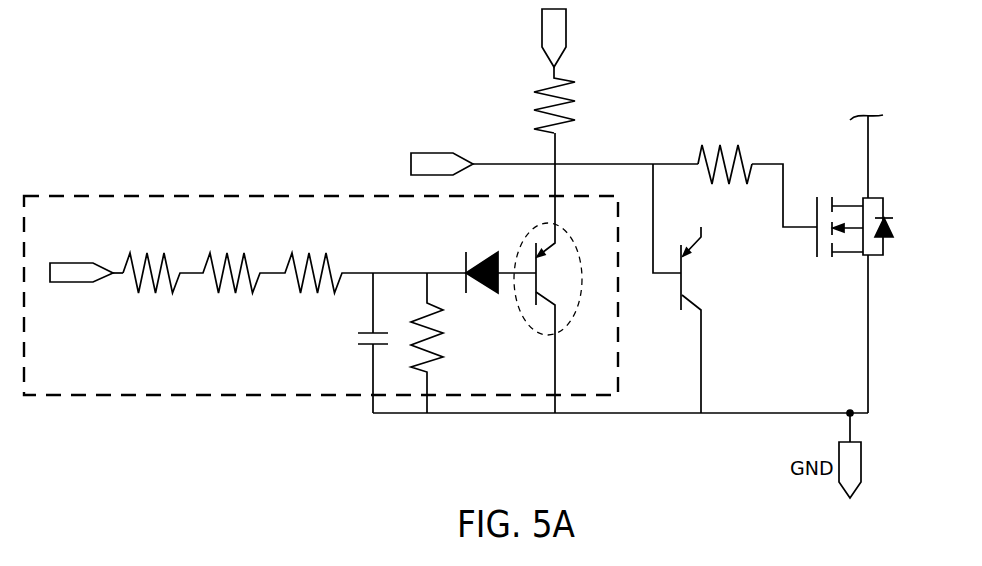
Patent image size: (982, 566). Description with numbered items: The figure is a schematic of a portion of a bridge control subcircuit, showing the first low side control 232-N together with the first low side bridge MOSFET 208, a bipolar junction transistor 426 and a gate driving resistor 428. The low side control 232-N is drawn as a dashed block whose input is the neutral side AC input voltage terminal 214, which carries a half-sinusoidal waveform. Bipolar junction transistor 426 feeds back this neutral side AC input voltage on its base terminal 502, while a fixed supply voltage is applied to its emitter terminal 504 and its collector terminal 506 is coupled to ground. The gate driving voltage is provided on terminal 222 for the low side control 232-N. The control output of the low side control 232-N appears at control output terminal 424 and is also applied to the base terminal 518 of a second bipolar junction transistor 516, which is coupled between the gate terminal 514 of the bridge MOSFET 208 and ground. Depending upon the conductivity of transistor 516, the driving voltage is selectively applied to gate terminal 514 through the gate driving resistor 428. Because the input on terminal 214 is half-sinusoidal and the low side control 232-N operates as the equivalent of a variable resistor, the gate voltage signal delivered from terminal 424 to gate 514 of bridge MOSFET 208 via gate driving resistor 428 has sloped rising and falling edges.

The low side control circuit 232-N is at (153, 196).
The neutral side AC input voltage terminal 214 is at (73, 263).
The bipolar junction transistor 426 is at (510, 273).
The base terminal 502 is at (535, 277).
The emitter terminal 504 is at (542, 251).
The collector terminal 506 is at (548, 300).
The gate driving voltage terminal 222 is at (566, 28).
The control output terminal 424 is at (411, 160).
The gate driving resistor 428 is at (727, 152).
The bipolar junction transistor 516 is at (703, 320).
The base terminal 518 is at (682, 278).
The gate terminal 514 is at (800, 228).
The bridge MOSFET 208 is at (875, 197).